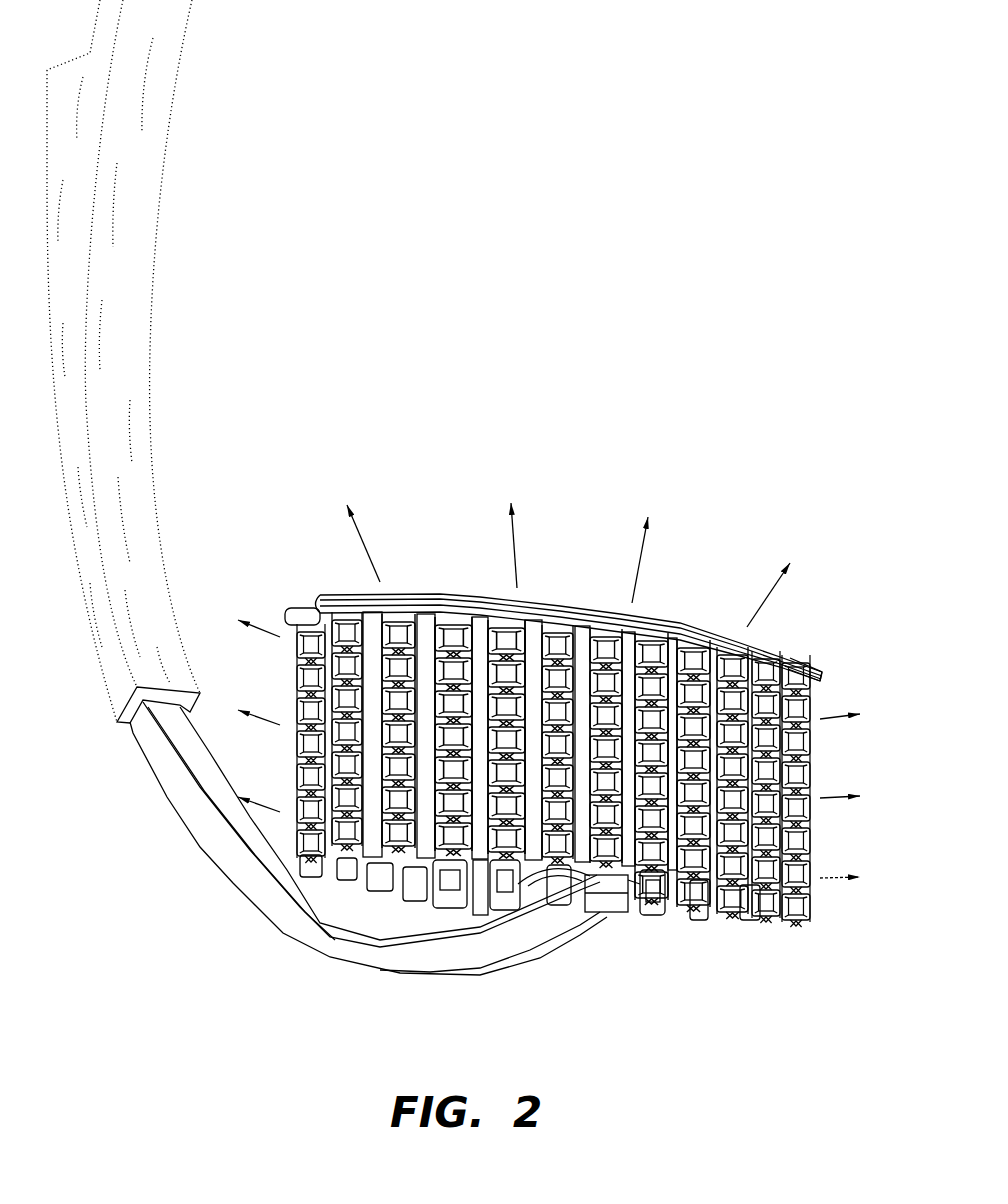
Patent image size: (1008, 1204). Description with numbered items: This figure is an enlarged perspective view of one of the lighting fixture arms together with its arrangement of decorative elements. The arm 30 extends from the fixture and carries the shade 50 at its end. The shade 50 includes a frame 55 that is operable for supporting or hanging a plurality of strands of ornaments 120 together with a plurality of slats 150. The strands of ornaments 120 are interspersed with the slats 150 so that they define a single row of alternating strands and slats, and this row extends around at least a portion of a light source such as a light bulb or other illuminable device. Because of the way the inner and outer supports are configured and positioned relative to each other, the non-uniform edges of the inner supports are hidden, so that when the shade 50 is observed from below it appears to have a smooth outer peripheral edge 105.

The cable 30 is at (190, 858).
The shade 50 is at (599, 723).
The frame 55 is at (450, 588).
The peripheral edge 105 is at (808, 667).
The strands of ornaments 120 is at (812, 907).
The slats 150 is at (375, 815).